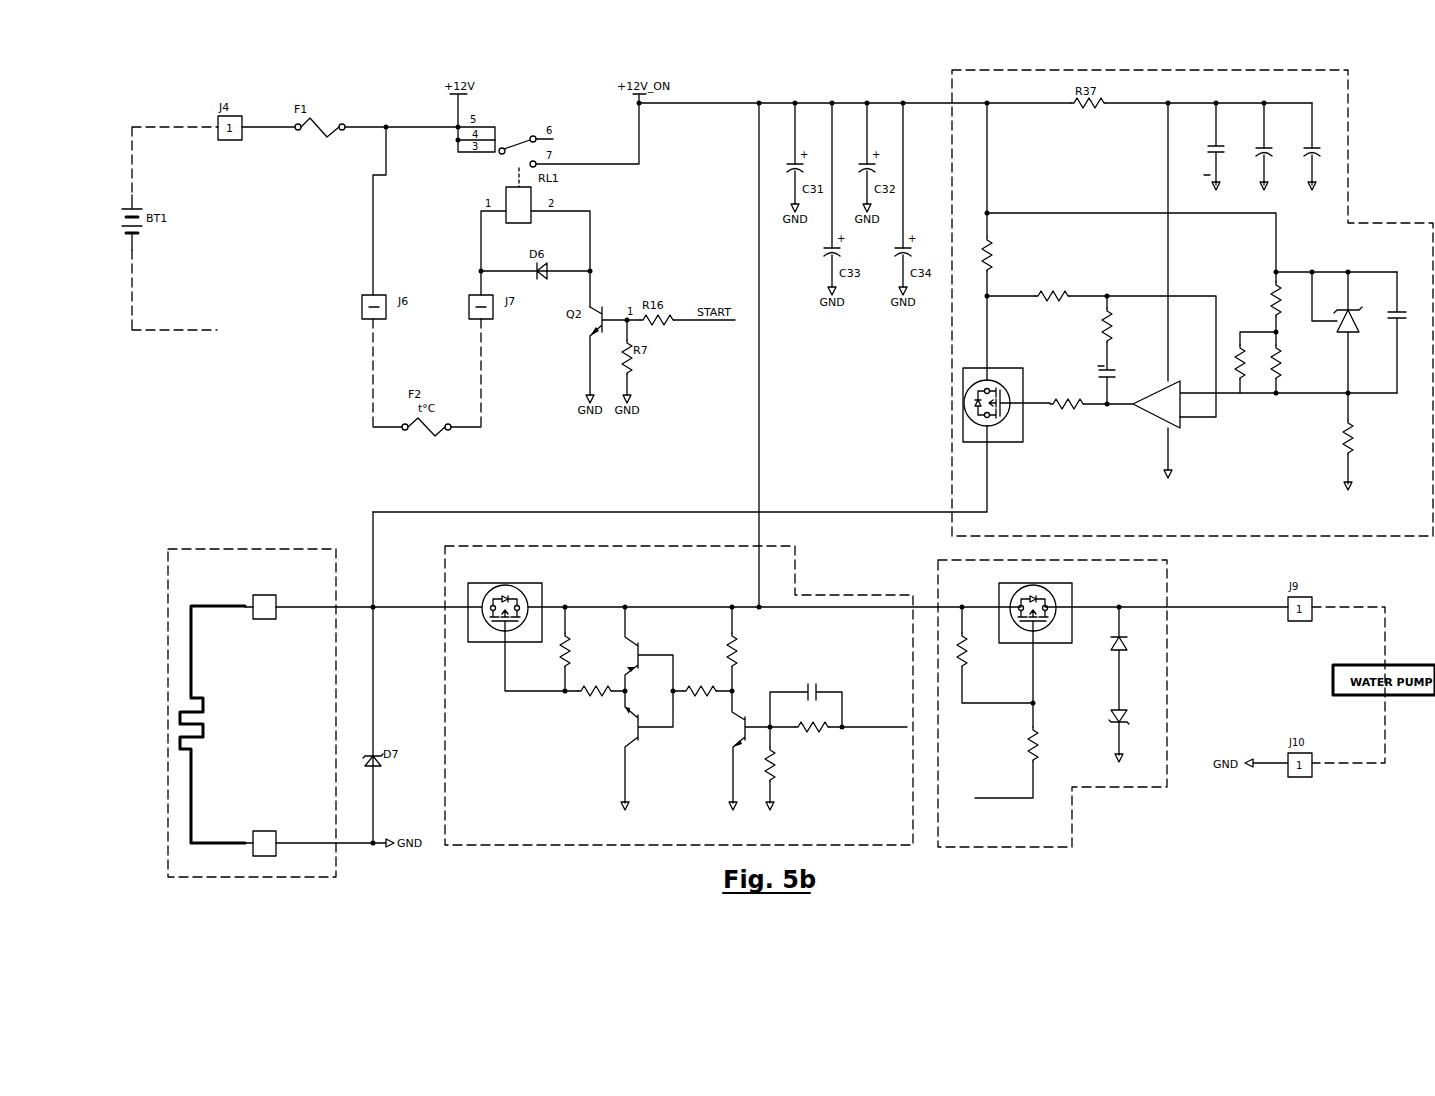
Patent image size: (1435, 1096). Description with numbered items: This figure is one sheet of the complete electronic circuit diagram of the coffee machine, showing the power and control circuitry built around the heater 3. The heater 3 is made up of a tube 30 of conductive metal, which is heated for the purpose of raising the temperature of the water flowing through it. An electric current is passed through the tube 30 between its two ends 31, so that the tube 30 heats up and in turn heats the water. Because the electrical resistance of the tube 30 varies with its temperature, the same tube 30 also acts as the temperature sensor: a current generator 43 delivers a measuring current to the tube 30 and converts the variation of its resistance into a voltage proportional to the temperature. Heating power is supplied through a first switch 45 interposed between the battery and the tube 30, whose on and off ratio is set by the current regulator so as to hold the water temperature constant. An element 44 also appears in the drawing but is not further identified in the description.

The heater 3 is at (241, 549).
The tube 30 is at (188, 627).
The ends 31 is at (263, 621).
The current generator 43 is at (1385, 223).
The water pump driver circuit 44 is at (1072, 787).
The first switch 45 is at (818, 593).